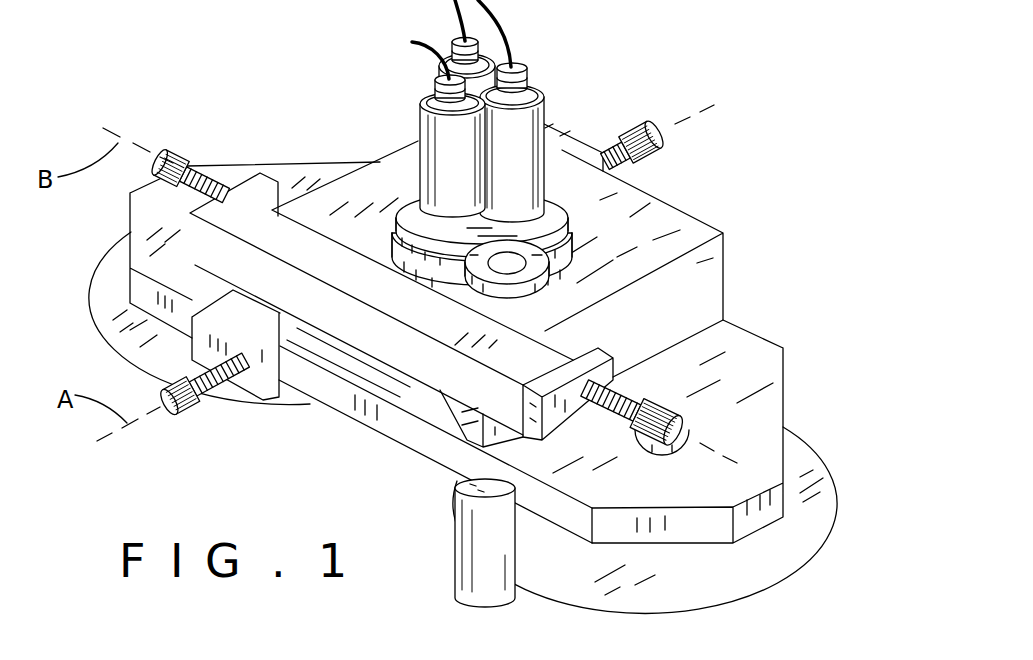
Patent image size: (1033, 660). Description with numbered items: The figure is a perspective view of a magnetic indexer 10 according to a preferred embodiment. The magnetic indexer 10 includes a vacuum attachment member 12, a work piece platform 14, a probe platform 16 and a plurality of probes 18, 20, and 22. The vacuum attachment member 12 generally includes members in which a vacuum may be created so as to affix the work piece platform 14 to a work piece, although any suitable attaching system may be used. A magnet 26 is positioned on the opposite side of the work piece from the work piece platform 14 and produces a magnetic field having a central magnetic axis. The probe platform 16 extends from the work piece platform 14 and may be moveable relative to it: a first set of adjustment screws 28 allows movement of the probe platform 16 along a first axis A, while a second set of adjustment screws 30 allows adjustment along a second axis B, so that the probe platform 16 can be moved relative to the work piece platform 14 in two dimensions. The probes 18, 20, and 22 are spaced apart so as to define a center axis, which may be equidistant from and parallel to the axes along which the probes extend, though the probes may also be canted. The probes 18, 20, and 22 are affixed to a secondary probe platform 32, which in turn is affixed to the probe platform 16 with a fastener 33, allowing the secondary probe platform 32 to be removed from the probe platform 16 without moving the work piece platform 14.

The magnetic indexer 10 is at (310, 74).
The vacuum attachment member 12 is at (103, 314).
The work piece platform 14 is at (750, 377).
The probe platform 16 is at (722, 262).
The probe 18 is at (533, 133).
The probe 20 is at (440, 64).
The probe 22 is at (422, 137).
The magnet 26 is at (475, 553).
The first set of adjustment screws 28 is at (657, 126).
The second set of adjustment screws 30 is at (180, 157).
The secondary probe platform 32 is at (568, 232).
The fastener 33 is at (551, 260).